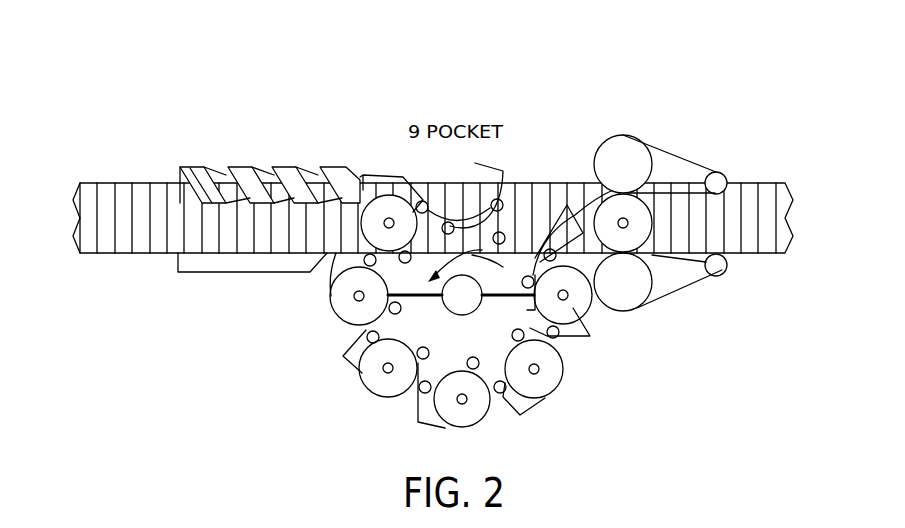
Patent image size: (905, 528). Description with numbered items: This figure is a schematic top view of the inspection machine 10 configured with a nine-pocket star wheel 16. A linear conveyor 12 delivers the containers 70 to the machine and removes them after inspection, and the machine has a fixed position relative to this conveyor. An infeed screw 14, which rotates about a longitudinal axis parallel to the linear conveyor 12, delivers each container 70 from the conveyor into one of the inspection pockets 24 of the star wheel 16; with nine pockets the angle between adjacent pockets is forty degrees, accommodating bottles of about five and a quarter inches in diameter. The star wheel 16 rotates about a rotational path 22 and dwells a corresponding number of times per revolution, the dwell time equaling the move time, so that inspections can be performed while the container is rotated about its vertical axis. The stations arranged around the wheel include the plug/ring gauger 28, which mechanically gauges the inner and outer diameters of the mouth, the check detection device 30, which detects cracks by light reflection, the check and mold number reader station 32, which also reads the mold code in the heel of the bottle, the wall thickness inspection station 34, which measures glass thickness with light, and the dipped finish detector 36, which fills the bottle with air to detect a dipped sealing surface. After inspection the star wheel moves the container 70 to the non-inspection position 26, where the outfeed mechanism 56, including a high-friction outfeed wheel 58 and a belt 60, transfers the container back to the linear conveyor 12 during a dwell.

The inspection machine 10 is at (560, 75).
The linear conveyor 12 is at (127, 182).
The infeed screw 14 is at (297, 166).
The star wheel 16 is at (526, 269).
The rotational path 22 is at (461, 282).
The inspection pockets 24 is at (457, 213).
The non-inspection position 26 is at (498, 217).
The plug/ring gauger 28 is at (318, 318).
The check detection device 30 is at (366, 400).
The check and mold number reader station 32 is at (490, 410).
The wall thickness inspection station 34 is at (560, 402).
The dipped finish detector 36 is at (615, 348).
The outfeed mechanism 56 is at (729, 292).
The outfeed wheel 58 is at (633, 295).
The belt 60 is at (692, 150).
The container 70 is at (607, 215).